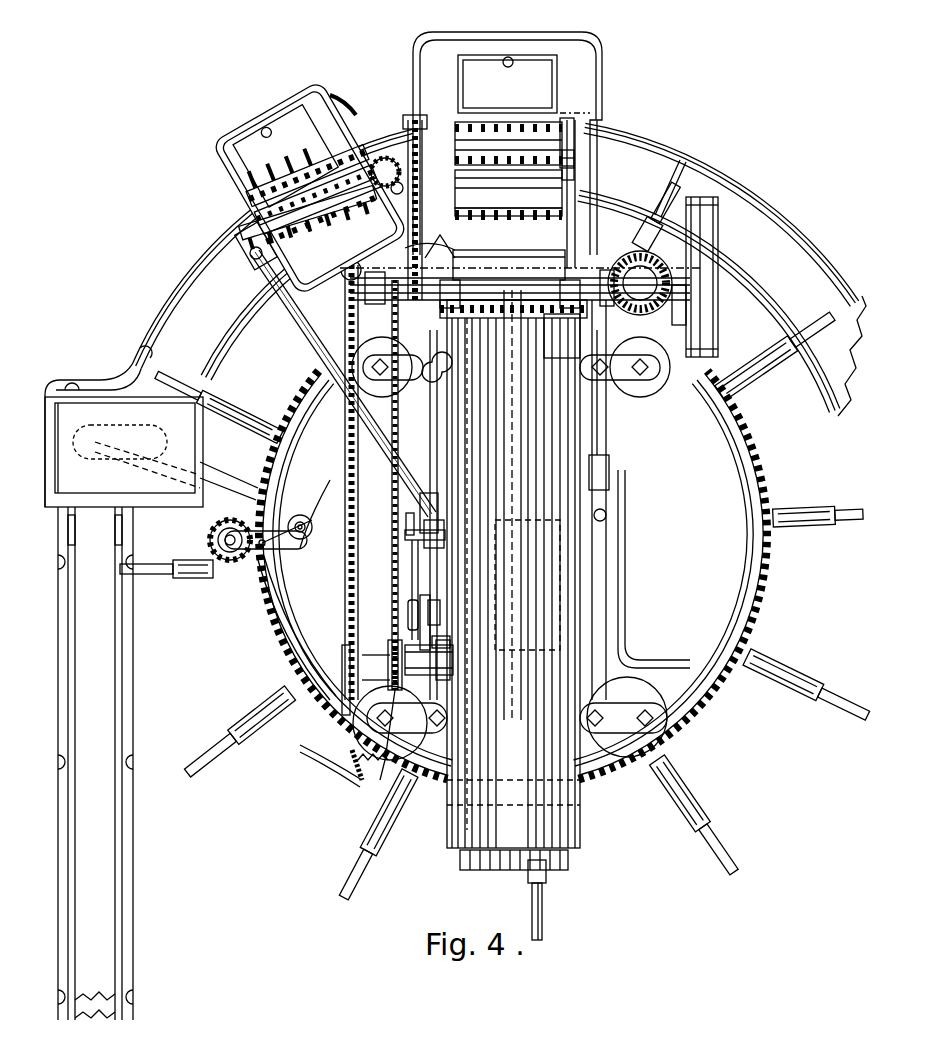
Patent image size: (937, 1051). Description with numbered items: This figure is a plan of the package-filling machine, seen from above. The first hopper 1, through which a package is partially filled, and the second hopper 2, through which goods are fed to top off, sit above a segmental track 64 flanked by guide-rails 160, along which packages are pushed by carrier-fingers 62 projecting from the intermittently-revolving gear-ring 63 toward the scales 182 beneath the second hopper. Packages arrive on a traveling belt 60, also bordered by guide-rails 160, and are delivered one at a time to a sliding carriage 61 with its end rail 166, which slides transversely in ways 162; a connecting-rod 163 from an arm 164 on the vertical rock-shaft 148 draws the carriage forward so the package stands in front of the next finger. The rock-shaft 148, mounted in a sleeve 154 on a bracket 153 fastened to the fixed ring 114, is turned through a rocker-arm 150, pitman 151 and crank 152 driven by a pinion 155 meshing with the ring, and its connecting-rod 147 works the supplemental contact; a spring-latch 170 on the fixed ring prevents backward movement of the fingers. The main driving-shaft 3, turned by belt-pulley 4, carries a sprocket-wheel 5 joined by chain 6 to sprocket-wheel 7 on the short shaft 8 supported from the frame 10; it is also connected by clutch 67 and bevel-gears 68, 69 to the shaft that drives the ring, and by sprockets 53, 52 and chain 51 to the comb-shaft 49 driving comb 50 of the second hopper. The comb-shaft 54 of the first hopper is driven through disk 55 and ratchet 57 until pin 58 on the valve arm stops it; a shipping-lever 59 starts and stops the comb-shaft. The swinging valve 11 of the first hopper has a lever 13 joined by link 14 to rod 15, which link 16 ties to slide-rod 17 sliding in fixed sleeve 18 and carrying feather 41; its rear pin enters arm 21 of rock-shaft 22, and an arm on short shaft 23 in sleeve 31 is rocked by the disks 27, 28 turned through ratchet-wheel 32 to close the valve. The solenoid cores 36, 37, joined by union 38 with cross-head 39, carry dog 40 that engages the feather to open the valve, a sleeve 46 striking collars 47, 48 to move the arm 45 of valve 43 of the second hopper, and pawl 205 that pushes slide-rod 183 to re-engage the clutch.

The first hopper 1 is at (228, 138).
The second hopper 2 is at (585, 44).
The main driving-shaft 3 is at (700, 310).
The belt-pulley 4 is at (718, 246).
The sprocket-wheel 5 is at (340, 290).
The chain 6 is at (345, 430).
The sprocket-wheel 7 is at (342, 660).
The short shaft 8 is at (384, 665).
The frame 10 is at (582, 824).
The swinging valve 11 is at (236, 190).
The lever 13 is at (238, 212).
The link 14 is at (244, 252).
The rod 15 is at (325, 342).
The link 16 is at (408, 500).
The slide-rod 17 is at (405, 536).
The fixed sleeve 18 is at (431, 616).
The arm 21 is at (404, 700).
The rock-shaft 22 is at (370, 770).
The short shaft 23 is at (455, 660).
The disk 27 is at (420, 630).
The disk 28 is at (408, 605).
The sleeve 31 is at (450, 640).
The ratchet-wheel 32 is at (330, 750).
The solenoid core 36 is at (610, 462).
The solenoid core 37 is at (512, 695).
The union 38 is at (595, 575).
The cross-head 39 is at (480, 520).
The dog 40 is at (405, 522).
The feather 41 is at (412, 560).
The valve 43 is at (570, 120).
The arm 45 is at (574, 150).
The sleeve 46 is at (440, 540).
The collar 47 is at (392, 470).
The collar 48 is at (445, 600).
The comb-shaft 49 is at (478, 128).
The comb 50 is at (508, 192).
The chain 51 is at (440, 222).
The sprocket 52 is at (410, 118).
The sprocket 53 is at (465, 262).
The comb-shaft 54 is at (355, 120).
The disk 55 is at (385, 158).
The ratchet 57 is at (408, 124).
The pin 58 is at (395, 180).
The shipping-lever 59 is at (562, 336).
The traveling belt 60 is at (95, 763).
The sliding carriage 61 is at (124, 452).
The carrier-fingers 62 is at (668, 210).
The gear-ring 63 is at (282, 598).
The segmental track 64 is at (180, 306).
The clutch 67 is at (690, 170).
The bevel-gear 68 is at (636, 252).
The bevel-gear 69 is at (612, 272).
The fixed ring 114 is at (287, 620).
The connecting-rod 147 is at (268, 545).
The rock-shaft 148 is at (282, 525).
The rocker-arm 150 is at (319, 525).
The pitman 151 is at (290, 552).
The crank 152 is at (235, 565).
The bracket 153 is at (290, 595).
The sleeve 154 is at (305, 522).
The pinion 155 is at (222, 560).
The guide-rails 160 is at (197, 268).
The ways 162 is at (145, 385).
The connecting-rod 163 is at (260, 492).
The arm 164 is at (295, 520).
The end rail 166 is at (45, 478).
The spring-latch 170 is at (312, 752).
The scales 182 is at (258, 220).
The slide-rod 183 is at (605, 440).
The pawl 205 is at (608, 525).